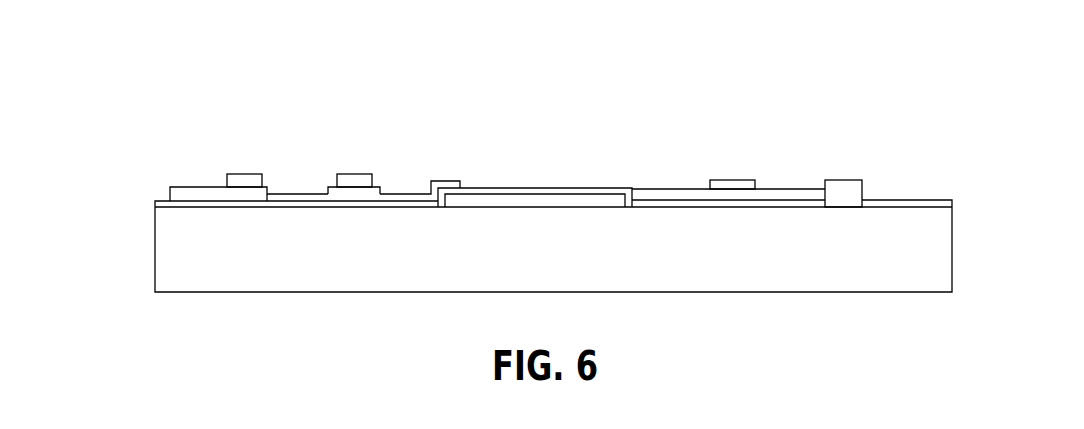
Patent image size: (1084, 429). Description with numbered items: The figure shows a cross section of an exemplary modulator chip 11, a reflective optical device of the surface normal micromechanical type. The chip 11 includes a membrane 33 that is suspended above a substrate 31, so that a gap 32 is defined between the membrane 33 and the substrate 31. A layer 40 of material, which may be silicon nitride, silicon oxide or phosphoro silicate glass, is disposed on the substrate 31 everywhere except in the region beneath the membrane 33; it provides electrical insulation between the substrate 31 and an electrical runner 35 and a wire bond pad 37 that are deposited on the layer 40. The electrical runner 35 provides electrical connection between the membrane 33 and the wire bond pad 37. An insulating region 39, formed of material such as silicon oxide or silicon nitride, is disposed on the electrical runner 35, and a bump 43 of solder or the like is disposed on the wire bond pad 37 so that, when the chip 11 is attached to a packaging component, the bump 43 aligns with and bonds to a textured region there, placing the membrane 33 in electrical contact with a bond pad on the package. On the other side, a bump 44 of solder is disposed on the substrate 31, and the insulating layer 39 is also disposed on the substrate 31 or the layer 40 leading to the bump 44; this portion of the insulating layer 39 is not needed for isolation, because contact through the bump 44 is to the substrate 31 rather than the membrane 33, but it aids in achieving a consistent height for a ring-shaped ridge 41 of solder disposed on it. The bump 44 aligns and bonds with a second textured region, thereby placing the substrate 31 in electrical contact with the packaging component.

The modulator chip 11 is at (899, 118).
The substrate 31 is at (623, 267).
The gap 32 is at (508, 200).
The membrane 33 is at (573, 188).
The electrical runner 35 is at (310, 200).
The wire bond pad 37 is at (212, 195).
The insulating region 39 is at (377, 190).
The layer 40 is at (155, 203).
The ring-shaped ridge 41 is at (353, 177).
The bump 43 is at (245, 177).
The bump 44 is at (842, 185).